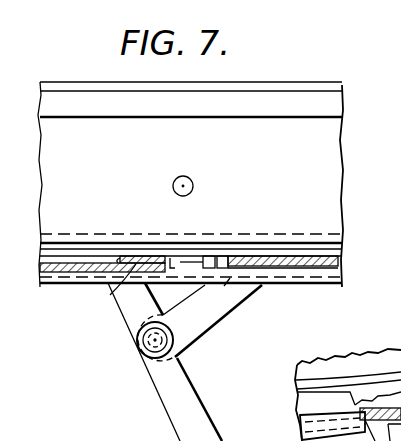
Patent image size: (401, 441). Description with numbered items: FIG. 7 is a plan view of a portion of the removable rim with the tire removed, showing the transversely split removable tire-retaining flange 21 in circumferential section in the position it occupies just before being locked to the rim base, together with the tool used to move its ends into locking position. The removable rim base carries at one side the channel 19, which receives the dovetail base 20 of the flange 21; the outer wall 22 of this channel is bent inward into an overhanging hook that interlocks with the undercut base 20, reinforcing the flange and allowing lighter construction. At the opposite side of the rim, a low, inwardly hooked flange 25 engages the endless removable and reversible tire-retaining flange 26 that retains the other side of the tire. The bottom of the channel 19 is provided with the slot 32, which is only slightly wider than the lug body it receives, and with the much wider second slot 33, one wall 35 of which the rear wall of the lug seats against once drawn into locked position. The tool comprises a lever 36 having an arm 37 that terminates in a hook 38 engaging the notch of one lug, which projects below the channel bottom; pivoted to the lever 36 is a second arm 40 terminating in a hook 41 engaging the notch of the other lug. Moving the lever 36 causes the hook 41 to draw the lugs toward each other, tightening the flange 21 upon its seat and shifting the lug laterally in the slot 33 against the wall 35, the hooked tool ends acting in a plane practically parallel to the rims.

The low inwardly hooked flange 25 is at (307, 92).
The endless removable and reversible tire-retaining flange 26 is at (192, 106).
The channel 19 is at (85, 258).
The slot 32 is at (152, 258).
The second slot 33 is at (207, 275).
The hook 41 is at (258, 257).
The base of the tire-retaining flange 20 is at (342, 259).
The outer wall of the channel 22 is at (305, 284).
The lever 36 is at (165, 388).
The arm 37 is at (128, 310).
The hook 38 is at (110, 295).
The wall of the slot 35 is at (234, 310).
The arm 40 is at (222, 276).
The transversely split removable tire-retaining flange 21 is at (348, 395).